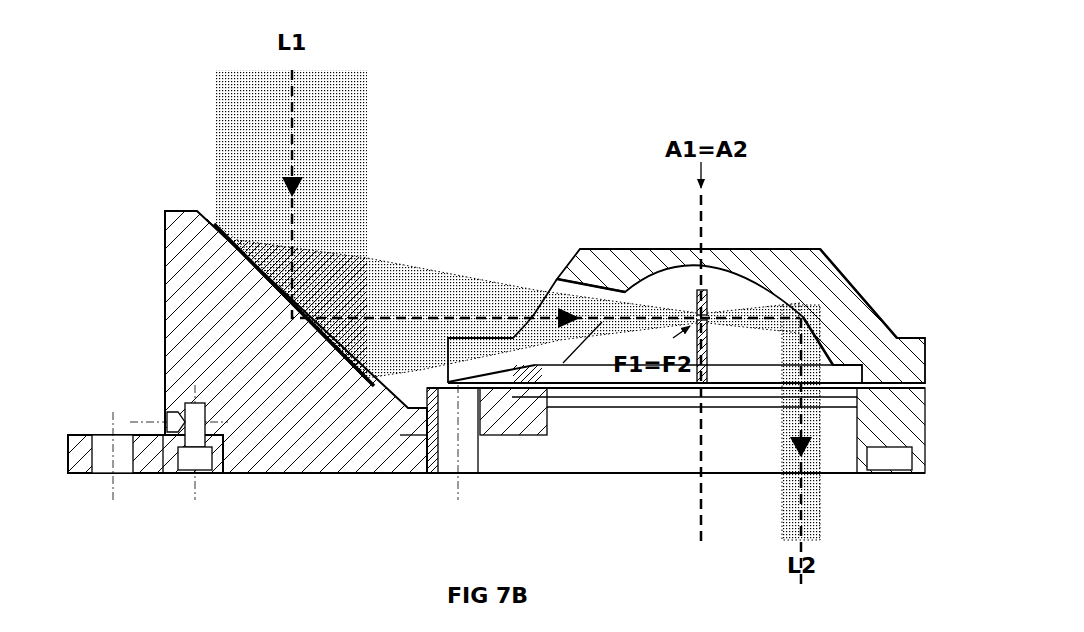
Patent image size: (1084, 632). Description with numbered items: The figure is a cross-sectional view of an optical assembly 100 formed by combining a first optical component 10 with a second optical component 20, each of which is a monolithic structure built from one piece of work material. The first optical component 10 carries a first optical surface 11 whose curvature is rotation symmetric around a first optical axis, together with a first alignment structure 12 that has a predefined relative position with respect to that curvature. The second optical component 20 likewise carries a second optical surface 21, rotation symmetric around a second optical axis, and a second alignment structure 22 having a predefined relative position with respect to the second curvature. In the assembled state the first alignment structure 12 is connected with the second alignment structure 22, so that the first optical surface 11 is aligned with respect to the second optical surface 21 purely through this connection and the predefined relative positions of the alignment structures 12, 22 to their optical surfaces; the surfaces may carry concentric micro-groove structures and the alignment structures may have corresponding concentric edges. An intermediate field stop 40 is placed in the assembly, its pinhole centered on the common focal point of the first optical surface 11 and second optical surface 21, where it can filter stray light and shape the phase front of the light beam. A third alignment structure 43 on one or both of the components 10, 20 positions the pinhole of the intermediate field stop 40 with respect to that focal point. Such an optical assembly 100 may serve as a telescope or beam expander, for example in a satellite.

The optical assembly 100 is at (151, 110).
The first optical component 10 is at (800, 267).
The first optical surface 11 is at (797, 322).
The first alignment structure 12 is at (574, 463).
The second alignment structure 22 is at (511, 401).
The second optical component 20 is at (298, 398).
The second optical surface 21 is at (322, 290).
The intermediate field stop 40 is at (688, 303).
The third alignment structure 43 is at (694, 402).